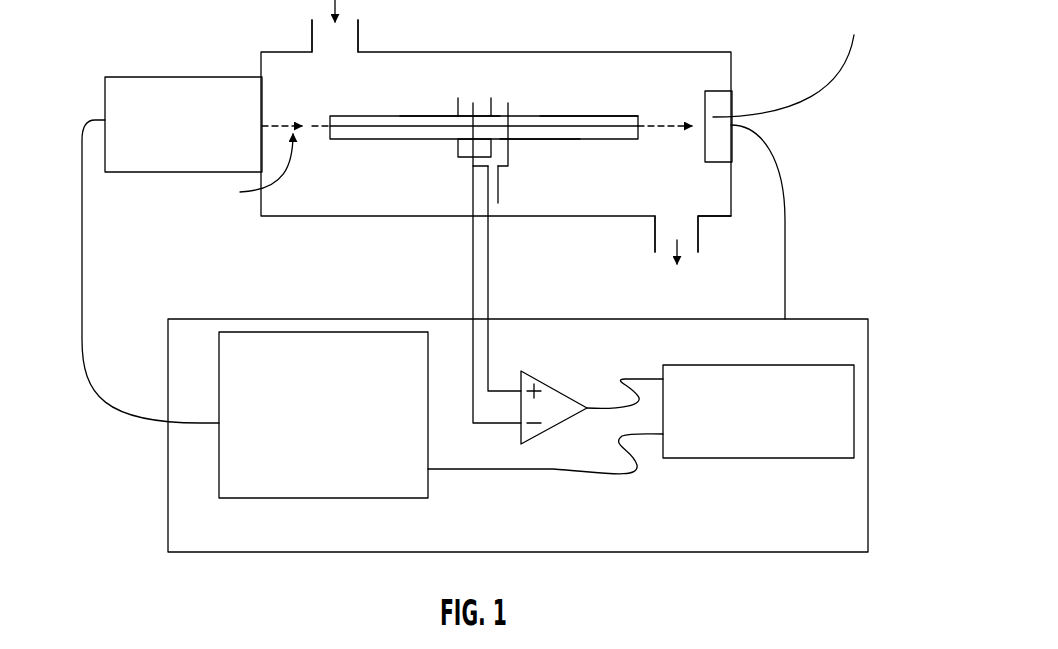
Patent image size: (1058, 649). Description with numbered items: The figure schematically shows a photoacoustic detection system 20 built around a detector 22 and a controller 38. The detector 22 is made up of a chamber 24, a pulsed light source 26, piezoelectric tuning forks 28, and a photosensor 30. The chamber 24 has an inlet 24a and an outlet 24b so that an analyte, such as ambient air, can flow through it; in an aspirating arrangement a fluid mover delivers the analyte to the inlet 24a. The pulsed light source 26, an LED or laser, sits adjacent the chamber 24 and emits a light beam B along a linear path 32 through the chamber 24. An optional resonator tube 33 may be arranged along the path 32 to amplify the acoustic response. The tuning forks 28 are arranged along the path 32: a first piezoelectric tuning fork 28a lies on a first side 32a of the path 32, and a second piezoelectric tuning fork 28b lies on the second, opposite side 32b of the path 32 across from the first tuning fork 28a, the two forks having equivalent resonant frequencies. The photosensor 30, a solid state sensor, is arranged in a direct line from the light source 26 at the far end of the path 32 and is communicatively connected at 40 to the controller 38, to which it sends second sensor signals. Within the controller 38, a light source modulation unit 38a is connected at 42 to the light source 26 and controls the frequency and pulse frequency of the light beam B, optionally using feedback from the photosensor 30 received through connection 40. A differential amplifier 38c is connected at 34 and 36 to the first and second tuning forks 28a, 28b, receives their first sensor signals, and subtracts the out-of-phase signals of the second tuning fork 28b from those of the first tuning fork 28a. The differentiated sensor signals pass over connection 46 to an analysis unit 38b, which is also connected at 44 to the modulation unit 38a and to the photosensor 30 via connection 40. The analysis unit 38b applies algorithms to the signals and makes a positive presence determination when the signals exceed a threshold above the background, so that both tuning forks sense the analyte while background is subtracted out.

The photoacoustic detection system 20 is at (80, 404).
The detector 22 is at (736, 184).
The chamber 24 is at (722, 217).
The inlet 24a is at (360, 23).
The outlet 24b is at (652, 237).
The pulsed light source 26 is at (125, 77).
The piezoelectric tuning forks 28 is at (481, 176).
The first piezoelectric tuning fork 28a is at (521, 167).
The second piezoelectric tuning fork 28b is at (458, 145).
The photosensor 30 is at (715, 91).
The path 32 is at (347, 116).
The first side of the path 32a is at (532, 133).
The upper layer of sensor plate 32b is at (448, 116).
The resonator tube 33 is at (578, 116).
The connection 34 is at (490, 343).
The connection 36 is at (473, 258).
The controller 38 is at (516, 435).
The light source modulation unit 38a is at (219, 473).
The analysis unit 38b is at (855, 403).
The differential amplifier 38c is at (548, 385).
The communicative connection 40 is at (786, 262).
The communicative connection 42 is at (82, 290).
The communicative connection 44 is at (633, 473).
The communicative connection 46 is at (630, 375).
The light beam B is at (458, 167).